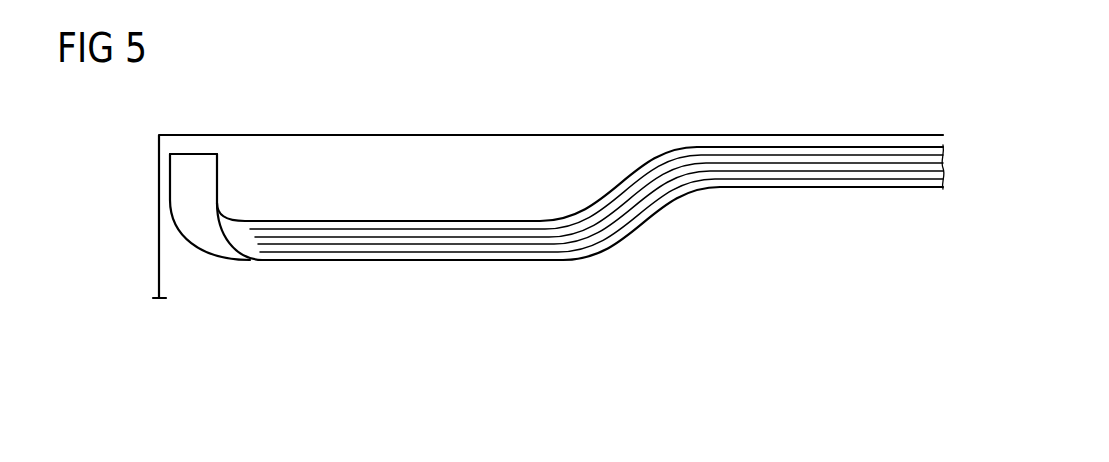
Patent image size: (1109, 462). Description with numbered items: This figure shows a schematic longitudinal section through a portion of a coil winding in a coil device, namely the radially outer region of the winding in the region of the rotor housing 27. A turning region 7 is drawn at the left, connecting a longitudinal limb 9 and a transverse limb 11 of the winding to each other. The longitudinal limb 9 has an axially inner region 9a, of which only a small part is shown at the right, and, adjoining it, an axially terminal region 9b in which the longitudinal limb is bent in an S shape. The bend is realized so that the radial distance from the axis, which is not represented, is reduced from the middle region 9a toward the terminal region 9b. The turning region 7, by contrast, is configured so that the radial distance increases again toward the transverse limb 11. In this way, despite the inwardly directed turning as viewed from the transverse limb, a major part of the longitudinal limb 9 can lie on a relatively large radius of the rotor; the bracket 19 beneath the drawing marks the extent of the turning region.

The transverse limb 11 is at (151, 163).
The turning region 7 is at (177, 244).
The longitudinal limb 9 is at (943, 388).
The axially inner region 9a is at (710, 313).
The axially terminal region 9b is at (707, 313).
The bend region 19 is at (270, 313).
The rotor housing 27 is at (823, 135).